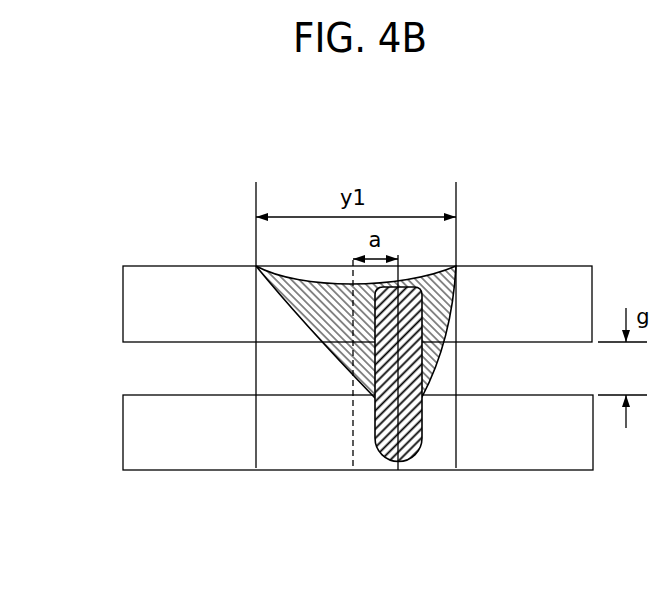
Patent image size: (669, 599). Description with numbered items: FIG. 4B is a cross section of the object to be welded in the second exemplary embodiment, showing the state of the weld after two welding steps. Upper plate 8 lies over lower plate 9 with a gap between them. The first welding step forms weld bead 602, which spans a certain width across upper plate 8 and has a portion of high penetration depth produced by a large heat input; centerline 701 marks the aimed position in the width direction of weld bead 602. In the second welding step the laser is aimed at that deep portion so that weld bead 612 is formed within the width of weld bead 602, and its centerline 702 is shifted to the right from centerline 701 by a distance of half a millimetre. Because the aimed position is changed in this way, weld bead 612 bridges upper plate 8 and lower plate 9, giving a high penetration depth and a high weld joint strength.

The upper plate 8 is at (218, 277).
The lower plate 9 is at (142, 456).
The weld bead 602 is at (437, 330).
The weld bead 612 is at (380, 448).
The centerline 701 is at (350, 262).
The centerline 702 is at (403, 270).